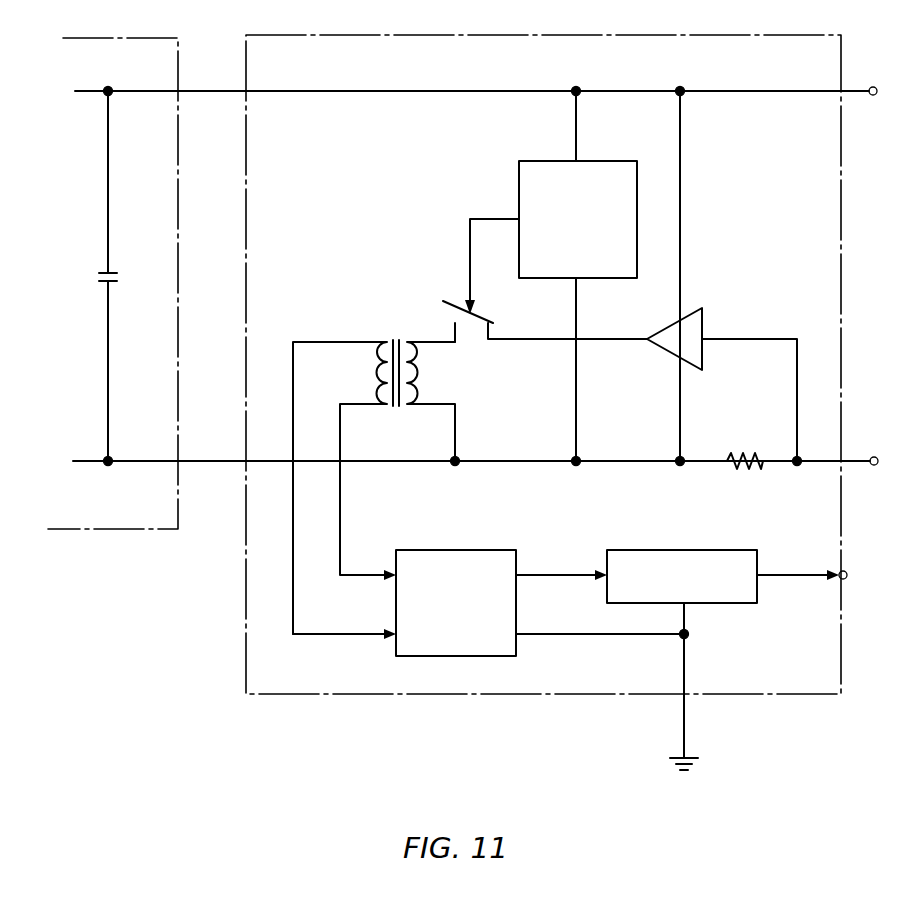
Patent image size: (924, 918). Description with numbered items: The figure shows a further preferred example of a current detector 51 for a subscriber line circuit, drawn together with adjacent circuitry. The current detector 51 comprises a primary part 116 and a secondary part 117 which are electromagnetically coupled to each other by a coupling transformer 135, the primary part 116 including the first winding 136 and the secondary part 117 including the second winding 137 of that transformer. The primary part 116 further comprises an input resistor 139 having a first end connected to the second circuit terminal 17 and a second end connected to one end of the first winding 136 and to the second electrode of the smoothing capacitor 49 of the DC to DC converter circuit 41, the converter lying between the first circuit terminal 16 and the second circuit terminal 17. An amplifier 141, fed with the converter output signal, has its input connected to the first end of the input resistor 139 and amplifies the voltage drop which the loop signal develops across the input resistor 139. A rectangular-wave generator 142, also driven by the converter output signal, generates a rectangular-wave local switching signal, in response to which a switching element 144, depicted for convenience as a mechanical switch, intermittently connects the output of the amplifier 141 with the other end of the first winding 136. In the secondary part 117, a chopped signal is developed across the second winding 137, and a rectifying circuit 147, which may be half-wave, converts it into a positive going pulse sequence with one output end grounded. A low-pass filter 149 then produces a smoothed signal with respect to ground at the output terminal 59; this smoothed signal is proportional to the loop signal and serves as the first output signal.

The first circuit terminal 16 is at (877, 86).
The second circuit terminal 17 is at (879, 458).
The DC to DC converter circuit 41 is at (143, 530).
The smoothing capacitor 49 is at (97, 273).
The current detector 51 is at (275, 697).
The output terminal 59 is at (848, 580).
The primary part 116 is at (442, 200).
The secondary part 117 is at (572, 532).
The coupling transformer 135 is at (397, 328).
The first winding 136 is at (416, 383).
The second winding 137 is at (378, 371).
The input resistor 139 is at (745, 457).
The amplifier 141 is at (706, 322).
The rectangular-wave generator 142 is at (535, 155).
The switching element 144 is at (484, 315).
The rectifying circuit 147 is at (436, 548).
The low-pass filter 149 is at (702, 548).